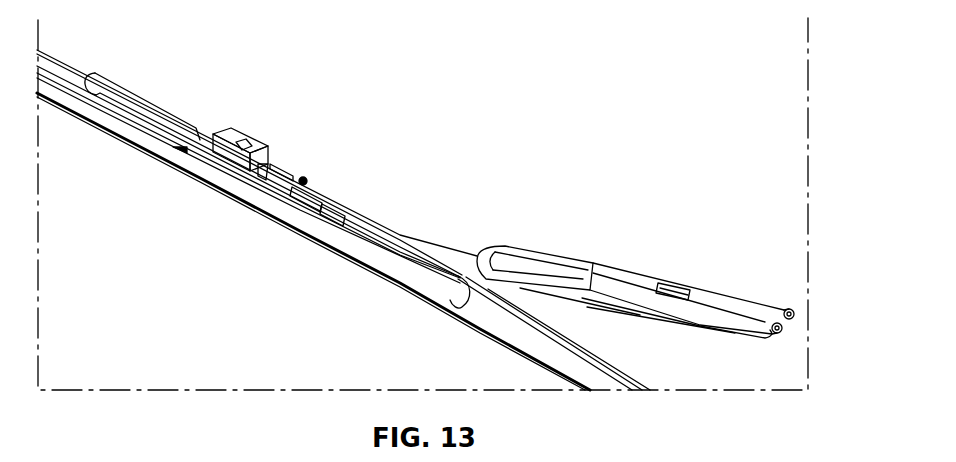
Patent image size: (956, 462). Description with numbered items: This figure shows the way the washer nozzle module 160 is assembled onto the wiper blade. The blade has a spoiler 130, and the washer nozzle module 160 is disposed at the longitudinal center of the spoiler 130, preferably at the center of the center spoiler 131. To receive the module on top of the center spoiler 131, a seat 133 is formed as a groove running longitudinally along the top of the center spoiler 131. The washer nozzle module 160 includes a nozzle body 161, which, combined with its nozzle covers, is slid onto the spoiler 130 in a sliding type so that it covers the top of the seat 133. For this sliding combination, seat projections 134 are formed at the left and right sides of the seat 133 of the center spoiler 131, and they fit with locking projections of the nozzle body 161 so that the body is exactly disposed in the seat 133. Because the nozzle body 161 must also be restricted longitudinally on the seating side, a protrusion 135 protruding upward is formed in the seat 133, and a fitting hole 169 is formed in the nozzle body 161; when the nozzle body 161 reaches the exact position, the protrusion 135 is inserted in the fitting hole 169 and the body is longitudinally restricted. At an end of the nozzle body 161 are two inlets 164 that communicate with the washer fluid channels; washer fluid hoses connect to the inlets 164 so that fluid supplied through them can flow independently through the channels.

The spoiler 130 is at (343, 210).
The center spoiler 131 is at (76, 63).
The seat 133 is at (140, 135).
The seat projections 134 is at (292, 226).
The protrusion 135 is at (308, 180).
The washer nozzle module 160 is at (635, 244).
The nozzle body 161 is at (527, 250).
The fitting hole 169 is at (683, 288).
The inlets 164 is at (773, 310).